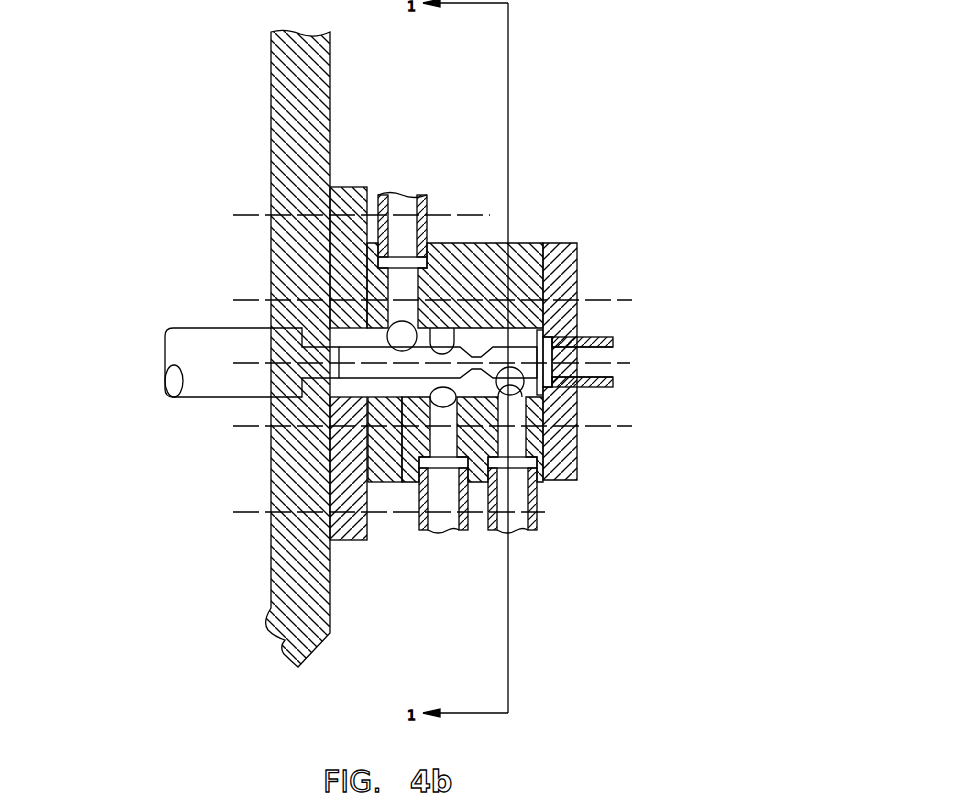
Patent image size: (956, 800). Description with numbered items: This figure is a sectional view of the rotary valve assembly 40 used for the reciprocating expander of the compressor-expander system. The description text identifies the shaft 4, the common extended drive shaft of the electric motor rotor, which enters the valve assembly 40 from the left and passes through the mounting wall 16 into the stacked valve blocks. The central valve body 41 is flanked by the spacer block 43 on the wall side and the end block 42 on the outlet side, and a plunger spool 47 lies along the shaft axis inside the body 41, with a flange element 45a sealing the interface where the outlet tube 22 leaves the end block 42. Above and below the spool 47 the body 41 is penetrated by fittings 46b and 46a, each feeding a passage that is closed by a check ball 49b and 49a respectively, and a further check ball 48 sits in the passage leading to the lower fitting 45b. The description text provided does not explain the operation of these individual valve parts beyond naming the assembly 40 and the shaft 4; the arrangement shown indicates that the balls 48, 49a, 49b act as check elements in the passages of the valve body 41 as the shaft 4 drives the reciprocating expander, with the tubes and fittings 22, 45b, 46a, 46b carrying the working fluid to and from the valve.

The shaft 4 is at (193, 327).
The wall plate 16 is at (273, 542).
The outlet tube 22 is at (615, 347).
The valve assembly 40 is at (148, 598).
The valve body block 41 is at (475, 242).
The end block 42 is at (577, 273).
The spacer block 43 is at (358, 187).
The seal flange 45a is at (552, 362).
The lower fitting 45b is at (518, 532).
The lower inlet fitting 46a is at (443, 532).
The upper inlet fitting 46b is at (406, 193).
The plunger spool 47 is at (522, 347).
The check ball 48 is at (521, 396).
The lower check ball 49a is at (396, 378).
The upper check ball 49b is at (445, 328).